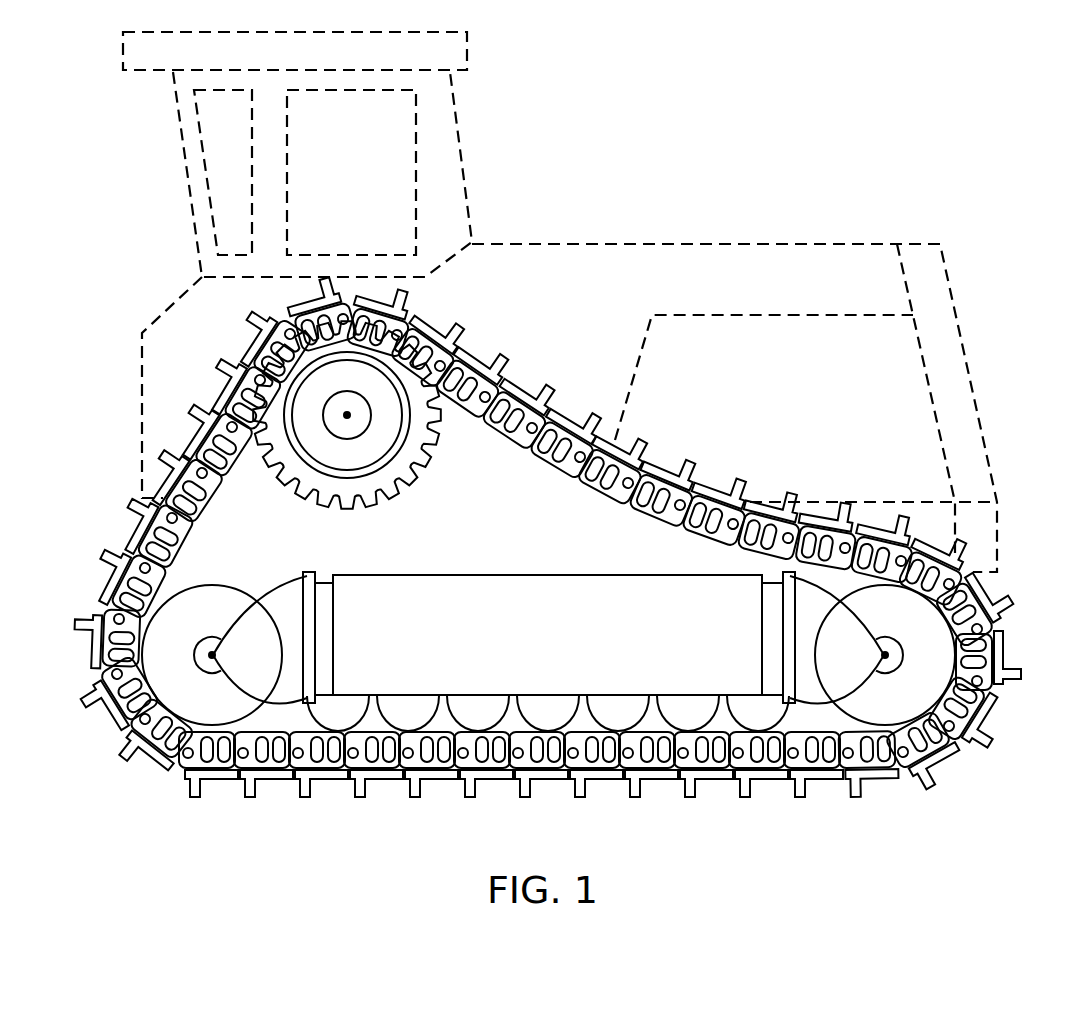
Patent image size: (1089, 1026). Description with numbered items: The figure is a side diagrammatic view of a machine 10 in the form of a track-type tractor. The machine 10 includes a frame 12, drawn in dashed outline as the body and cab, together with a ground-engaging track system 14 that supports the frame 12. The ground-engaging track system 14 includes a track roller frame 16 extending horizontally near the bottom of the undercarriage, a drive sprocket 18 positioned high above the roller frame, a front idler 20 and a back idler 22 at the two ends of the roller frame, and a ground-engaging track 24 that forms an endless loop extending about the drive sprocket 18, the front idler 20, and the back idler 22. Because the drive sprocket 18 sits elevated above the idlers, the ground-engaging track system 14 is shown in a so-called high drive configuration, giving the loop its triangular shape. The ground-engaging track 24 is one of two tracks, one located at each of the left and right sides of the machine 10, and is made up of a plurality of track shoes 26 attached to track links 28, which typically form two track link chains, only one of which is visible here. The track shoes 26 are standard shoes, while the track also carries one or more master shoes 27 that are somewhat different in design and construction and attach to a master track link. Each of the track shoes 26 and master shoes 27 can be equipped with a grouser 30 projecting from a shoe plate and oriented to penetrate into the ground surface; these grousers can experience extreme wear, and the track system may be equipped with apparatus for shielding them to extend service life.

The machine 10 is at (1038, 178).
The frame 12 is at (1002, 516).
The ground-engaging track system 14 is at (999, 728).
The track roller frame 16 is at (566, 580).
The drive sprocket 18 is at (338, 493).
The front idler 20 is at (870, 700).
The back idler 22 is at (198, 612).
The ground-engaging track 24 is at (960, 756).
The track shoes 26 is at (722, 779).
The master shoe 27 is at (768, 782).
The track links 28 is at (661, 780).
The grouser 30 is at (688, 796).